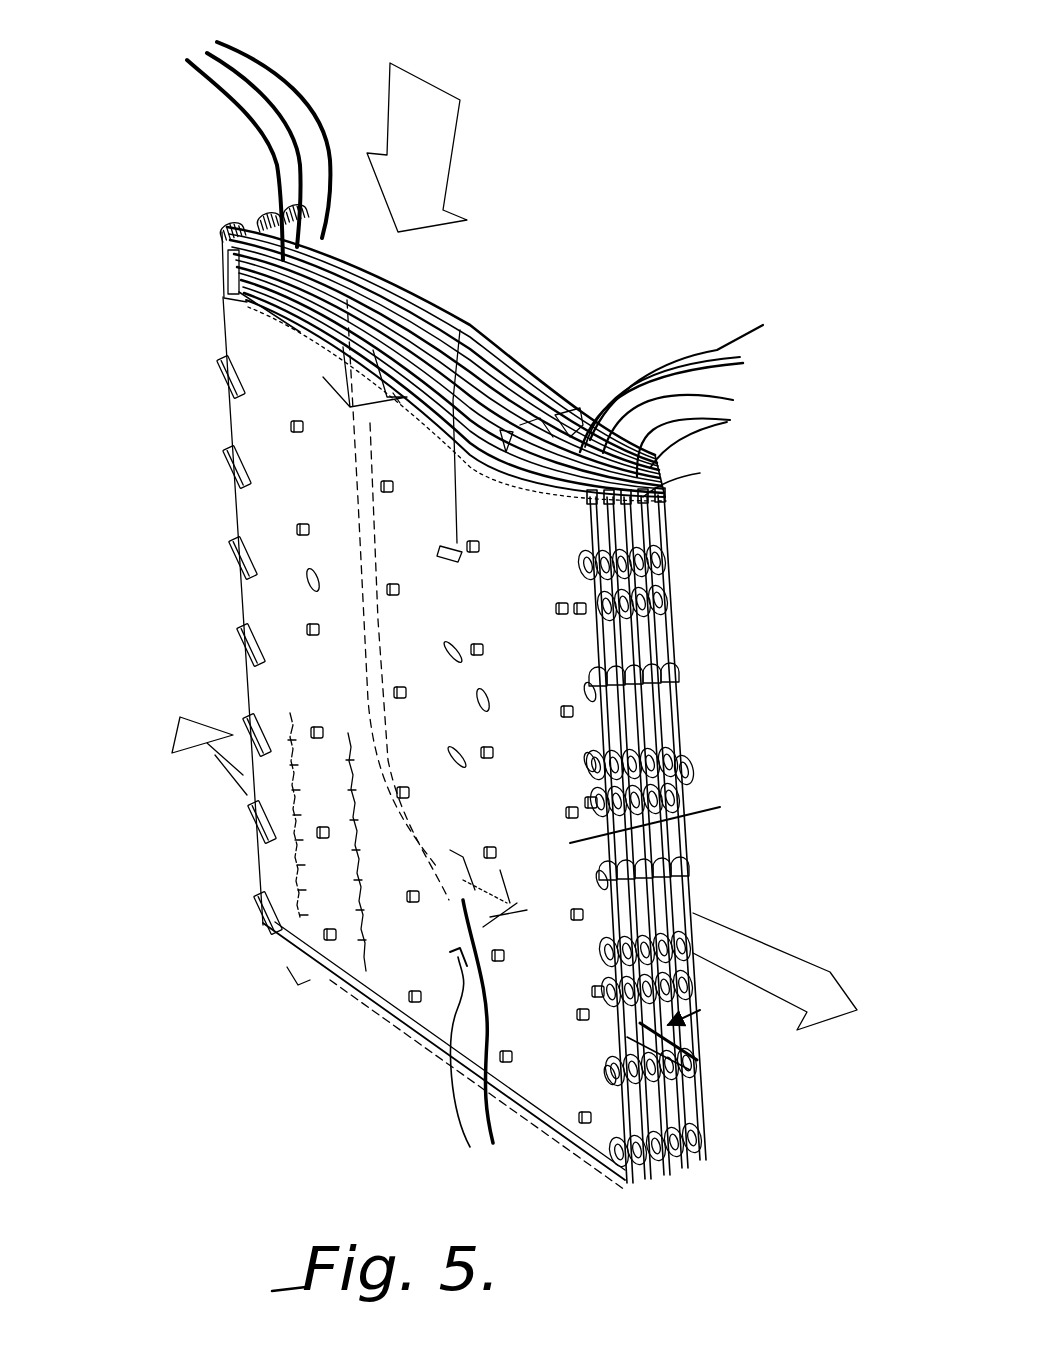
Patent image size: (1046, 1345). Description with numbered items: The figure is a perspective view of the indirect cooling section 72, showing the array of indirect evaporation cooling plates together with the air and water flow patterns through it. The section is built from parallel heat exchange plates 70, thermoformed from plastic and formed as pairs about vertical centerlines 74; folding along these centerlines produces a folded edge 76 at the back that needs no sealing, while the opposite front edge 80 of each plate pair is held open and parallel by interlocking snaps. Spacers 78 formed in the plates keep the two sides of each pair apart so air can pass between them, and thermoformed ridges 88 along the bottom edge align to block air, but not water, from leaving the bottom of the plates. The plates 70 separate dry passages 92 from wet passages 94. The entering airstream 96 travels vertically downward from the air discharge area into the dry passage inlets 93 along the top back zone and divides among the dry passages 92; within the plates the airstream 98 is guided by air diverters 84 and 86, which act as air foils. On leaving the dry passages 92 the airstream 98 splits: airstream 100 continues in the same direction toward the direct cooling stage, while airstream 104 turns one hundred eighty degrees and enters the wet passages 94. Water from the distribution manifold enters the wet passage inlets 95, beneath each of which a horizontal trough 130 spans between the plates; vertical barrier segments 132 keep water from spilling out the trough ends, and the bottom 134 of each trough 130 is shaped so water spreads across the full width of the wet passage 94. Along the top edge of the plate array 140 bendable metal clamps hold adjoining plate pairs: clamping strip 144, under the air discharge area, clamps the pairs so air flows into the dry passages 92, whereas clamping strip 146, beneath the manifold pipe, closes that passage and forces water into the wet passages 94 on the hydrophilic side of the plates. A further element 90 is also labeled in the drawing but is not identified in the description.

The heat exchange plates 70 is at (243, 204).
The indirect cooling section 72 is at (205, 395).
The vertical centerlines 74 is at (218, 238).
The folded edge 76 is at (292, 250).
The spacers 78 is at (297, 435).
The front edge 80 is at (662, 627).
The air diverter 84 is at (527, 372).
The air diverter 86 is at (233, 640).
The thermoformed ridges 88 is at (340, 963).
The roller track 90 is at (433, 467).
The dry passages 92 is at (665, 767).
The dry passage inlets 93 is at (250, 136).
The wet passages 94 is at (683, 883).
The wet passage inlets 95 is at (689, 389).
The airstream 96 is at (437, 133).
The airstream 98 is at (367, 703).
The airstream 100 is at (833, 977).
The airstream 104 is at (208, 760).
The horizontal trough 130 is at (310, 327).
The vertical barrier segments 132 is at (223, 277).
The bottom of trough 134 is at (263, 317).
The plate array 140 is at (418, 285).
The clamping strip 144 is at (460, 330).
The clamping strip 146 is at (717, 442).